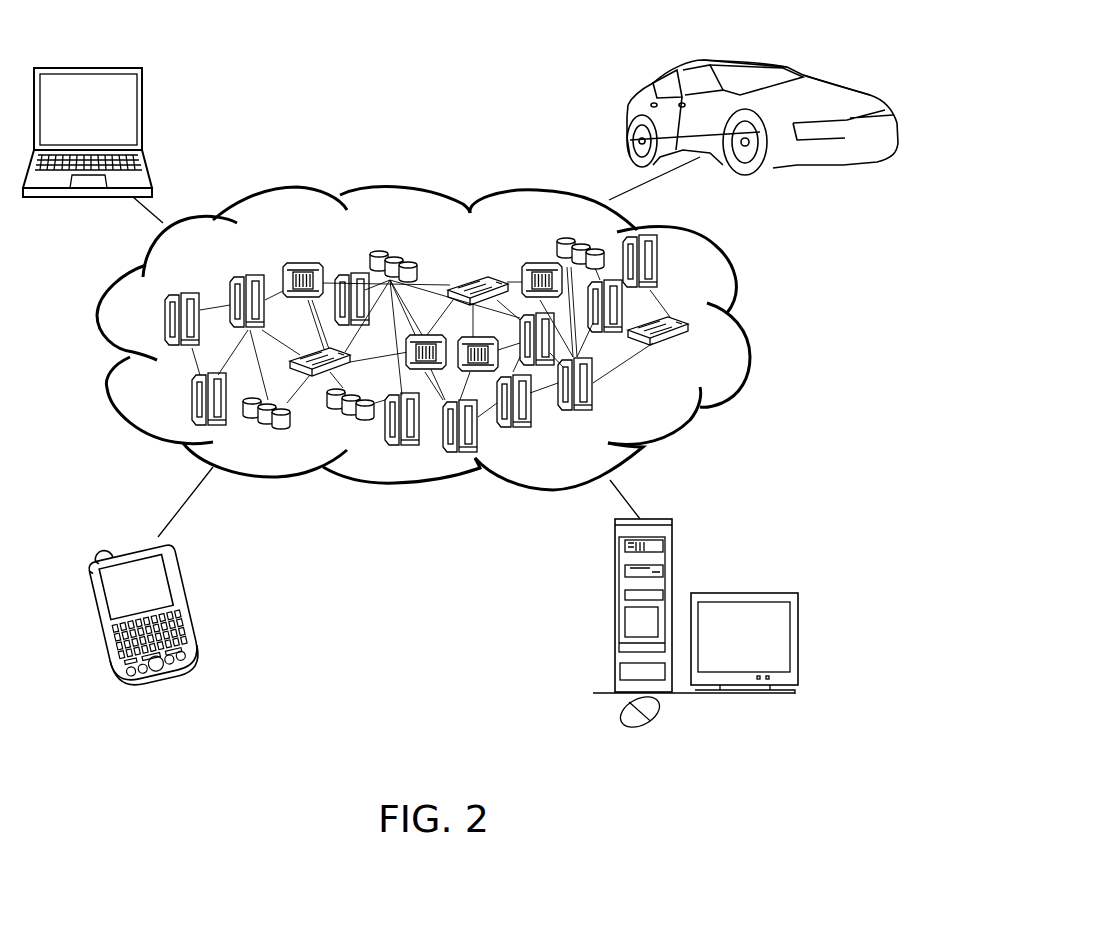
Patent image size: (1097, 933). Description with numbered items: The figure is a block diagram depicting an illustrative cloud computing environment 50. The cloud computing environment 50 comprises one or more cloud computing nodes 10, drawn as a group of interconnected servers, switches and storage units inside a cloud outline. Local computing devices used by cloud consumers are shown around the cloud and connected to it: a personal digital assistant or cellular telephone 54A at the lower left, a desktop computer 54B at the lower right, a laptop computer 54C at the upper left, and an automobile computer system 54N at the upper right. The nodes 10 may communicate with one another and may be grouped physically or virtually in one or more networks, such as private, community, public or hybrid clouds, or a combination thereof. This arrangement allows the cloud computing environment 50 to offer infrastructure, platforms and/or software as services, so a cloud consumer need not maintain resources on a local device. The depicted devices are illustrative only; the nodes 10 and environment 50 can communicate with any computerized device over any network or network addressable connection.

The cloud computing nodes 10 is at (673, 406).
The cloud computing environment 50 is at (743, 330).
The personal digital assistant (PDA) or cellular telephone 54A is at (183, 578).
The desktop computer 54B is at (615, 567).
The laptop computer 54C is at (143, 112).
The automobile computer system 54N is at (628, 112).